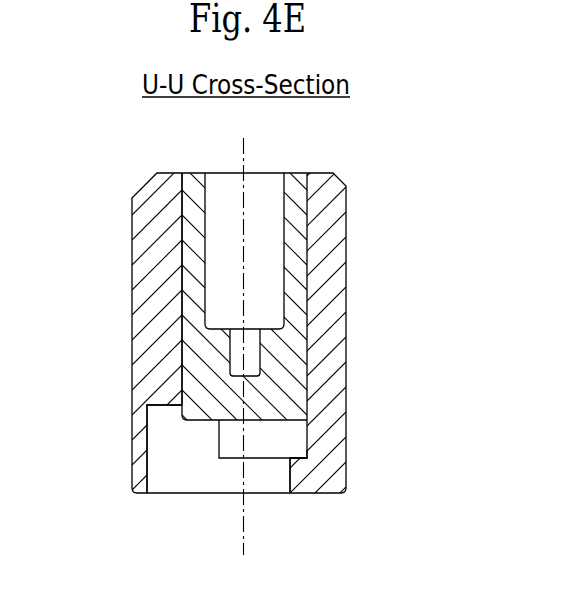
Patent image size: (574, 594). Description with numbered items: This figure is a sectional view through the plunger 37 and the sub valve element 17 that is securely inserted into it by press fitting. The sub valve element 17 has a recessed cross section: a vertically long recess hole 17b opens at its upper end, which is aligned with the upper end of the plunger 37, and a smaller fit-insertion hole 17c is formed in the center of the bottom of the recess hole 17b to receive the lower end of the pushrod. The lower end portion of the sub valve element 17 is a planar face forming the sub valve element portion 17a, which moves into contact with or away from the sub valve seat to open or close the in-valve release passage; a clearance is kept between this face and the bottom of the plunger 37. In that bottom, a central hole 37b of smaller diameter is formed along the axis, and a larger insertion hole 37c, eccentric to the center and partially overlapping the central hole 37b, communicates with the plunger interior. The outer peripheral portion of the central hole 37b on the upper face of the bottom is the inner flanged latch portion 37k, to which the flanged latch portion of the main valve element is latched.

The plunger 37 is at (133, 228).
The sub valve element 17 is at (298, 183).
The sub valve element portion 17a is at (283, 424).
The recess hole 17b is at (286, 260).
The fit-insertion hole 17c is at (230, 357).
The central hole 37b is at (292, 475).
The insertion hole 37c is at (148, 462).
The inner flanged latch portion 37k is at (300, 453).